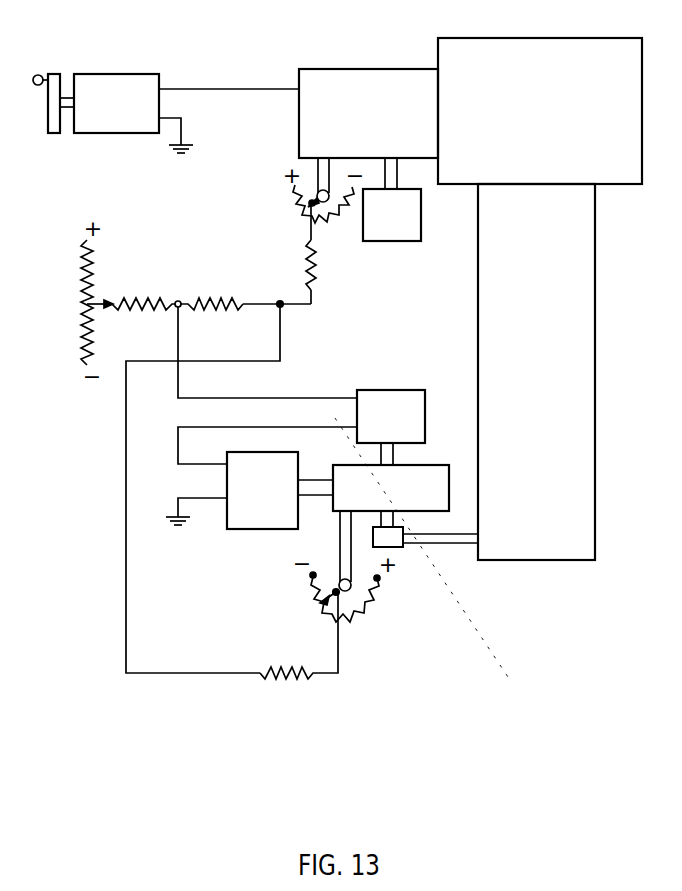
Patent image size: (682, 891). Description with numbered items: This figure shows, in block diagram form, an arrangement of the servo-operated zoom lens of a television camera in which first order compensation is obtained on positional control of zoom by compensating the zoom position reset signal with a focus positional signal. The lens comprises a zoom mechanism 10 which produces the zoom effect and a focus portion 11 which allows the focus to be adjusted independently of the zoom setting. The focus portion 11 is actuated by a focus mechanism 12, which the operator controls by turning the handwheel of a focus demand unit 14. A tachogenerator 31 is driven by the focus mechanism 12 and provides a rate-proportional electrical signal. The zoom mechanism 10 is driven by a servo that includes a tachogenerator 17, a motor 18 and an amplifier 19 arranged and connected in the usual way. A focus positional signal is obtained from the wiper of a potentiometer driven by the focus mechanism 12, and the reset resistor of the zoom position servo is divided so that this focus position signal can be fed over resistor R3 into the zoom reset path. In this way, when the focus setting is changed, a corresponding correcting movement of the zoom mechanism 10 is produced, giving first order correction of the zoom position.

The zoom mechanism 10 is at (536, 372).
The focus portion 11 is at (540, 111).
The focus mechanism 12 is at (368, 113).
The focus demand unit 14 is at (96, 103).
The tachogenerator 17 is at (391, 416).
The motor 18 is at (391, 488).
The amplifier 19 is at (262, 490).
The tachogenerator 31 is at (392, 215).
The resistor R3 is at (325, 265).